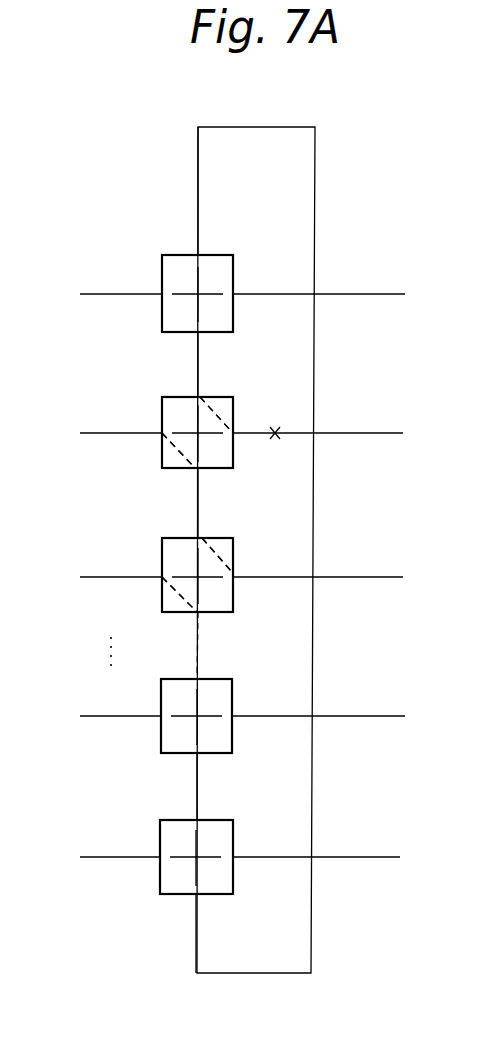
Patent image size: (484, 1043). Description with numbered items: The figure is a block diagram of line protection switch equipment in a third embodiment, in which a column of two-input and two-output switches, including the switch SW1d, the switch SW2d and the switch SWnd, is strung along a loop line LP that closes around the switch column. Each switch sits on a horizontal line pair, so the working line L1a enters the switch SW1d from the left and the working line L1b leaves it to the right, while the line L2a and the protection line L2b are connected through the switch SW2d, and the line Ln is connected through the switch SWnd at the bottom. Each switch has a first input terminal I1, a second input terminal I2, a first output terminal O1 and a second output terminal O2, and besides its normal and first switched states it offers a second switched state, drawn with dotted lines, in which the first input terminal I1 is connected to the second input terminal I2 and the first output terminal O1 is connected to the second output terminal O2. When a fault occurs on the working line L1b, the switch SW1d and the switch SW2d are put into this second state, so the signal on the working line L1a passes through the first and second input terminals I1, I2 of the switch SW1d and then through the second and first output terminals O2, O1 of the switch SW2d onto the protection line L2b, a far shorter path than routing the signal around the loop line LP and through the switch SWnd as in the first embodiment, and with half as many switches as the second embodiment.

The loop line LP is at (262, 127).
The switch SW1d is at (206, 397).
The switch SW2d is at (209, 538).
The switch SWnd is at (208, 820).
The working line L1a is at (121, 419).
The working line L1b is at (318, 422).
The line L2a is at (121, 563).
The protection line L2b is at (318, 563).
The line Ln is at (237, 843).
The first input terminal I1 is at (168, 450).
The second input terminal I2 is at (216, 445).
The first output terminal O1 is at (229, 557).
The second output terminal O2 is at (179, 563).